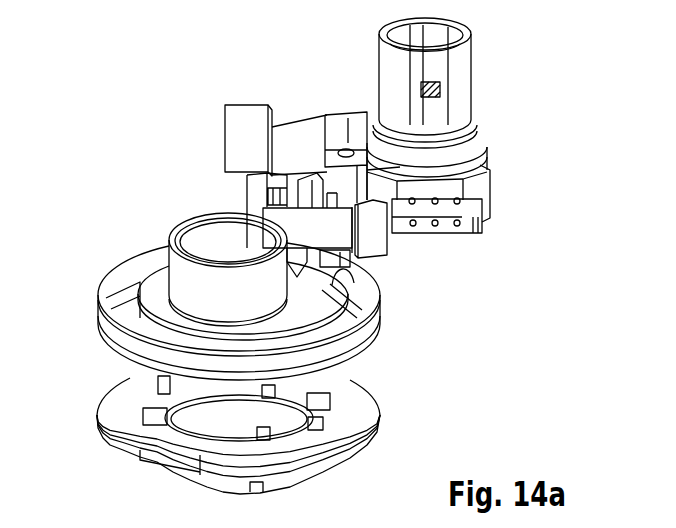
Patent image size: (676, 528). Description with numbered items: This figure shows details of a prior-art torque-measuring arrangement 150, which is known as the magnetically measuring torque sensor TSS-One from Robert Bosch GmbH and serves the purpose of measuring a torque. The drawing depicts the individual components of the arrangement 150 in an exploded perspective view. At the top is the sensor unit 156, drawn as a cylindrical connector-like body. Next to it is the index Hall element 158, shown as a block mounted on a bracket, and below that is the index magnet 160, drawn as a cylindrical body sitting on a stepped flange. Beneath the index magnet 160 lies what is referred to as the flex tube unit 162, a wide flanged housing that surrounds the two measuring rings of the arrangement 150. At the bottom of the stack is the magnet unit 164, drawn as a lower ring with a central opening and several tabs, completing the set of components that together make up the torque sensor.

The arrangement 150 is at (121, 122).
The sensor unit 156 is at (463, 77).
The index Hall element 158 is at (247, 178).
The index magnet 160 is at (365, 276).
The flex tube unit 162 is at (376, 344).
The magnet unit 164 is at (376, 421).